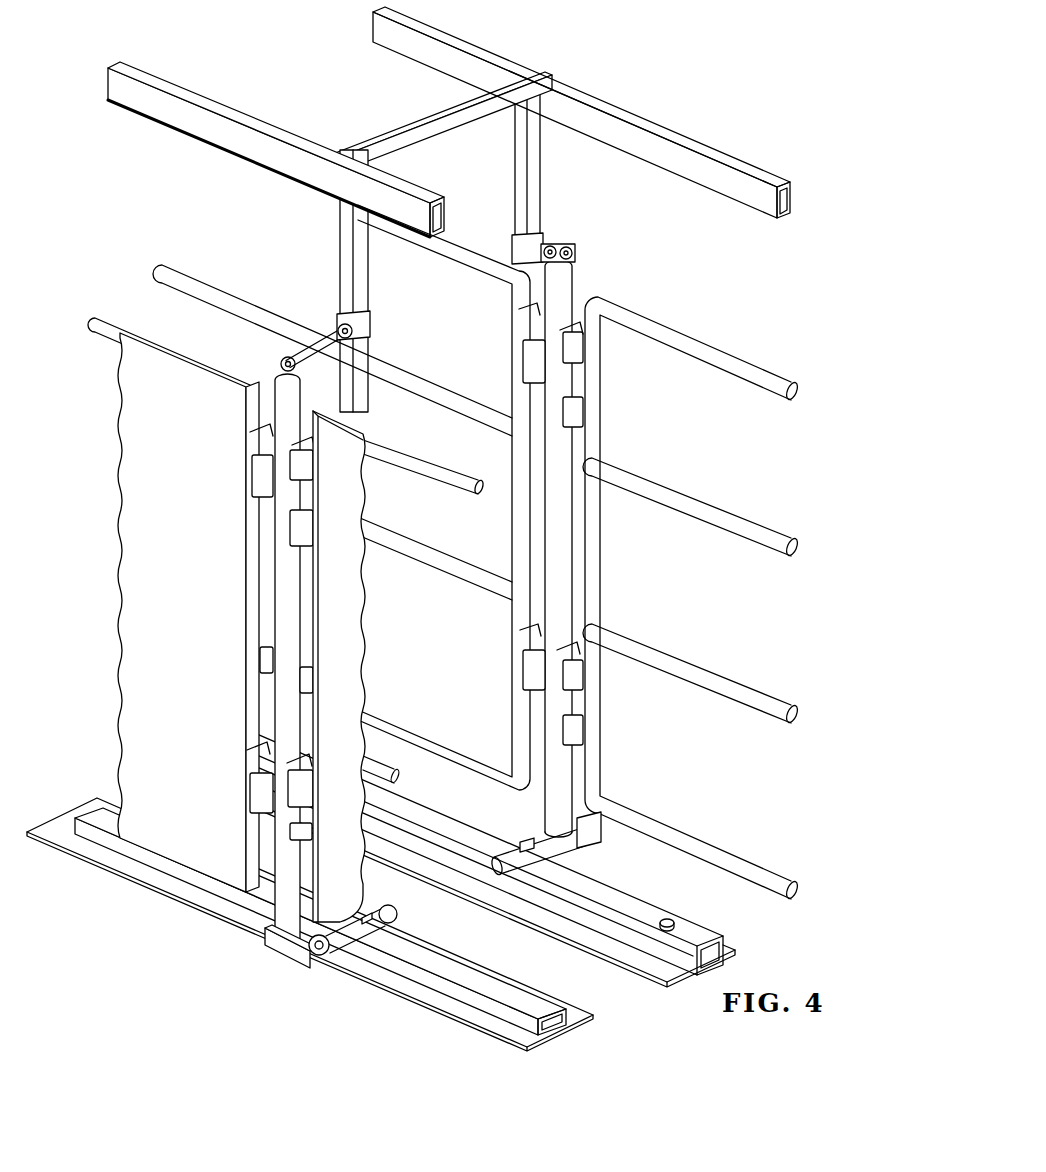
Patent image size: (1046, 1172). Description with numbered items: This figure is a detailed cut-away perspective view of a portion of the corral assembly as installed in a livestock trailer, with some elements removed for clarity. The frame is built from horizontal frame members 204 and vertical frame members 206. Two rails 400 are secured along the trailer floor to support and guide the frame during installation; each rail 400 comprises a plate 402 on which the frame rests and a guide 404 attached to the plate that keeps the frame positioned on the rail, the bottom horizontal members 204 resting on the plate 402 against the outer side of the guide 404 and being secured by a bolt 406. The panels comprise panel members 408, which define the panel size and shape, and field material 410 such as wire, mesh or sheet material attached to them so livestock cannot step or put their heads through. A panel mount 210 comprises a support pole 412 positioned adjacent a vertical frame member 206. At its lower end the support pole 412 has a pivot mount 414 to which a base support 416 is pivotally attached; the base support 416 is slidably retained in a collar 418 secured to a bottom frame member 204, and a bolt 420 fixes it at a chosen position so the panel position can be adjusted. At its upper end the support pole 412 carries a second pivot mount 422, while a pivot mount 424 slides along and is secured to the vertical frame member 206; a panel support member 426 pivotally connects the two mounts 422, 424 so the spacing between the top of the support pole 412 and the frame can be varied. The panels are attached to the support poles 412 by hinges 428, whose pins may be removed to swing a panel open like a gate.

The horizontal frame member 204 is at (427, 65).
The vertical frame member 206 is at (513, 202).
The panel mount 210 is at (278, 968).
The rail 400 is at (368, 926).
The plate 402 is at (610, 952).
The guide 404 is at (670, 955).
The bolt 406 is at (667, 913).
The panel member 408 is at (785, 882).
The field material 410 is at (157, 582).
The support pole 412 is at (280, 893).
The pivot mount 414 is at (312, 960).
The base support 416 is at (347, 943).
The collar 418 is at (380, 924).
The bolt 420 is at (520, 838).
The second pivot mount 422 is at (277, 362).
The pivot mount 424 is at (333, 320).
The panel support member 426 is at (310, 343).
The hinge 428 is at (572, 348).